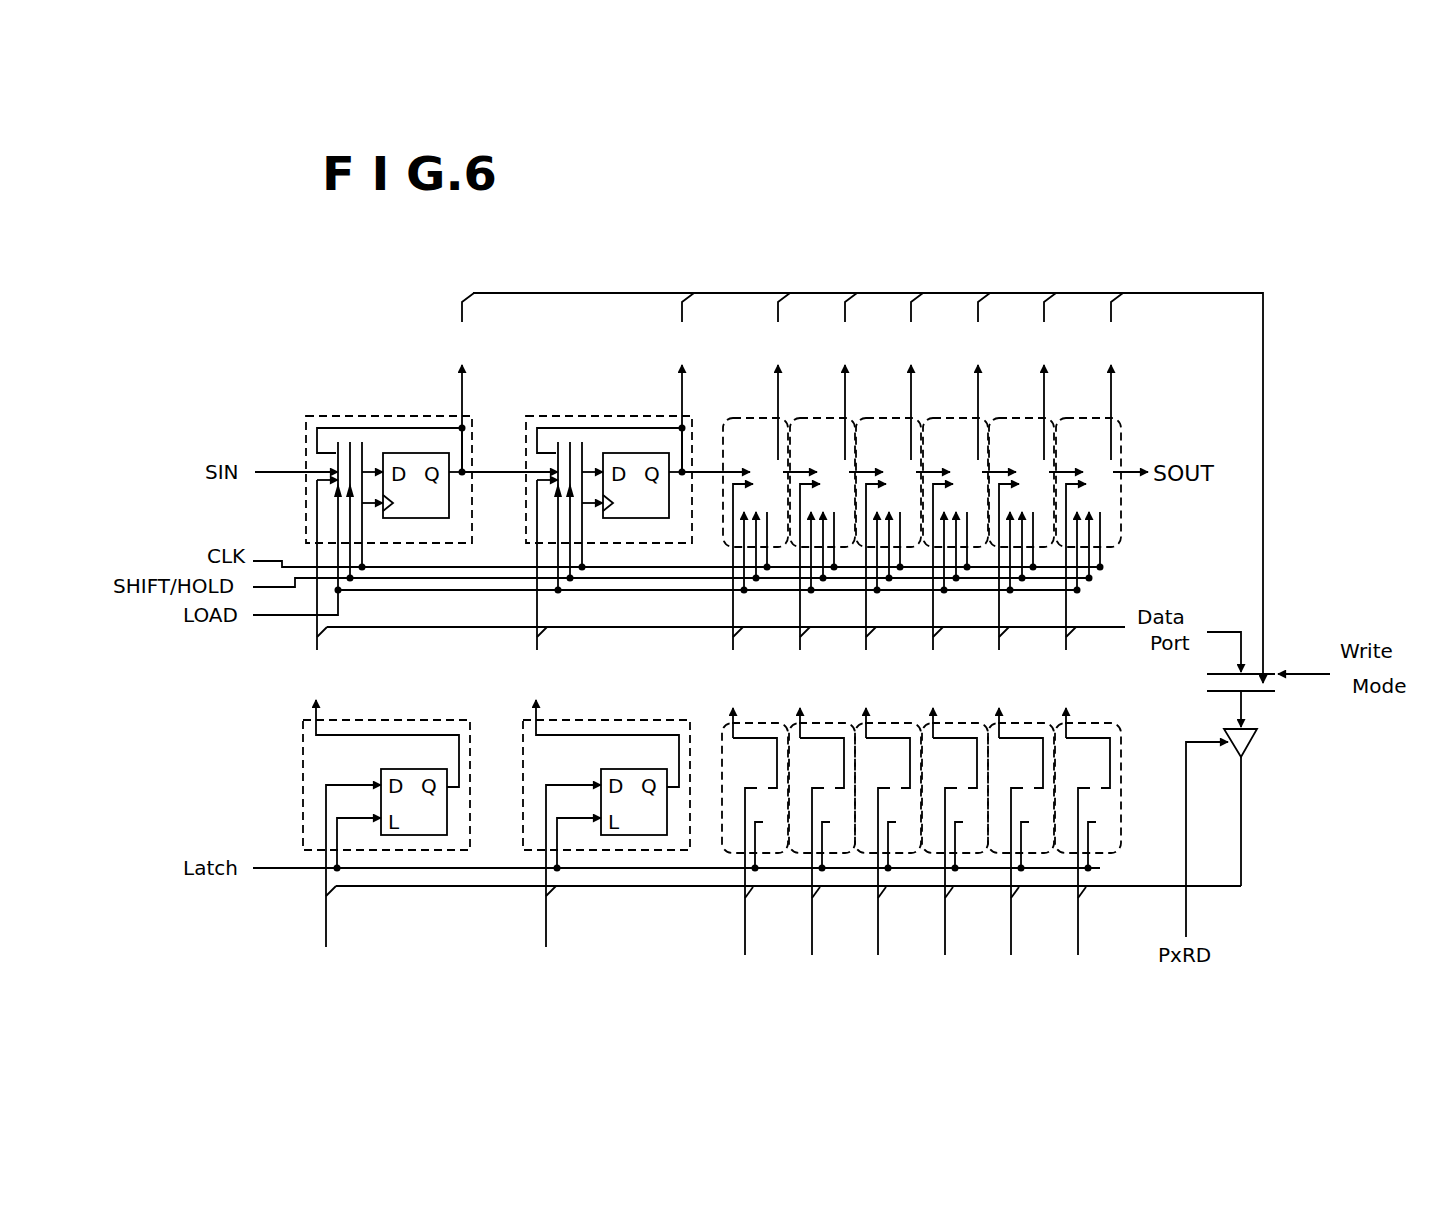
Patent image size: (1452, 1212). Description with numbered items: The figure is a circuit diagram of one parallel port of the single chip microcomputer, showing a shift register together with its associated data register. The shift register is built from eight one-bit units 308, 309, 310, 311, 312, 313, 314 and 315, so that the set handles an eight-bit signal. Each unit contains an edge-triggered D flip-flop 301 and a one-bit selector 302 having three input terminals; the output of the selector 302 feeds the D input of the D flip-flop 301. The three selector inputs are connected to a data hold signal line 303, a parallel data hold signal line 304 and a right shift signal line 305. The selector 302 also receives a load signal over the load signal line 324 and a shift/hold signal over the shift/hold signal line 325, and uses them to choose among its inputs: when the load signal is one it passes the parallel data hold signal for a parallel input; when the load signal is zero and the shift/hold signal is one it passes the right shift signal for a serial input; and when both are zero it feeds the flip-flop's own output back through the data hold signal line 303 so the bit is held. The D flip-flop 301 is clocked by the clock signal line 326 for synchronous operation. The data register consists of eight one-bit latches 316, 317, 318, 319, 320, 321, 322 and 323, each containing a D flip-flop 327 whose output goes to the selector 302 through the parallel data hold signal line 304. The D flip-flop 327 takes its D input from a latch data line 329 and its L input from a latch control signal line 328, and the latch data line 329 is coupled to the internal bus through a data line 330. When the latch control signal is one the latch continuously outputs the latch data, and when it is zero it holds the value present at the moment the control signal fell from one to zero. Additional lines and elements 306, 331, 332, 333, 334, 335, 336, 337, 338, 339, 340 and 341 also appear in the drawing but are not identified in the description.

The D flip-flop 301 is at (390, 453).
The selector 302 is at (372, 445).
The data hold signal line 303 is at (362, 442).
The parallel data hold signal line 304 is at (314, 470).
The right shift signal line 305 is at (305, 481).
The Q0 output line 306 is at (448, 341).
The unit 308 is at (342, 463).
The unit 309 is at (565, 417).
The unit 310 is at (757, 418).
The unit 311 is at (824, 418).
The unit 312 is at (890, 418).
The unit 313 is at (957, 418).
The unit 314 is at (1023, 418).
The unit 315 is at (1090, 418).
The latch 316 is at (337, 771).
The latch 317 is at (620, 720).
The latch 318 is at (760, 722).
The latch 319 is at (827, 722).
The latch 320 is at (893, 722).
The latch 321 is at (960, 722).
The latch 322 is at (1026, 722).
The latch 323 is at (1093, 722).
The load signal line 324 is at (336, 506).
The shift/hold signal line 325 is at (382, 523).
The clock signal line 326 is at (370, 520).
The D flip-flop 327 is at (407, 768).
The latch control signal line 328 is at (352, 817).
The latch data line 329 is at (325, 812).
The data line 330 is at (280, 593).
The data input line D1 331 is at (293, 613).
The data input line D2 332 is at (745, 913).
The data input line D3 333 is at (812, 913).
The data input line D4 334 is at (878, 913).
The data input line D5 335 is at (945, 913).
The data input line D6 336 is at (1011, 913).
The data input line D7 337 is at (1078, 913).
The write mode multiplexer 338 is at (1302, 677).
The multiplexer output line 339 is at (1252, 693).
The tri-state output buffer 340 is at (1250, 748).
The PxRD enable line 341 is at (1186, 793).